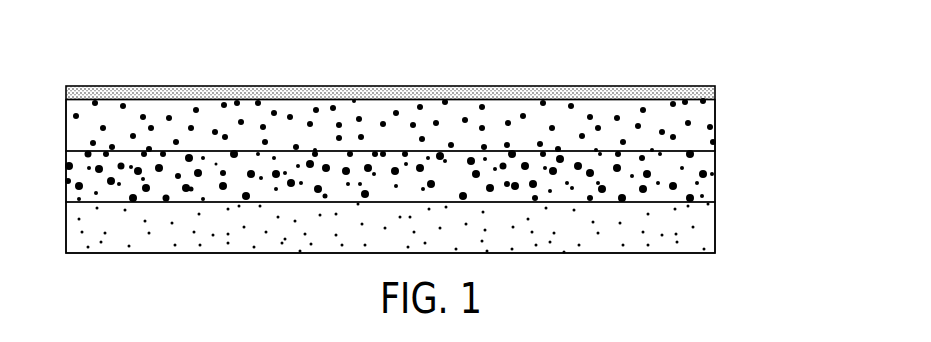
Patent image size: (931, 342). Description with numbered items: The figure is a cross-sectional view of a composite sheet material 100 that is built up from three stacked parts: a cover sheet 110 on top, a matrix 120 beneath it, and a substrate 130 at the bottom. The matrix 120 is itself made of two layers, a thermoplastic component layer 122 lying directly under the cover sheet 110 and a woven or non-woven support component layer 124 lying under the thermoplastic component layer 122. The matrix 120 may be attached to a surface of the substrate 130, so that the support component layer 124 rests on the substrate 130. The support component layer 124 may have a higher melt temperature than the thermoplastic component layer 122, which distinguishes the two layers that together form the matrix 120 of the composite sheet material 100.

The composite sheet material 100 is at (96, 71).
The cover sheet 110 is at (725, 86).
The matrix 120 is at (820, 97).
The thermoplastic component layer 122 is at (720, 130).
The support component layer 124 is at (720, 180).
The substrate 130 is at (724, 221).